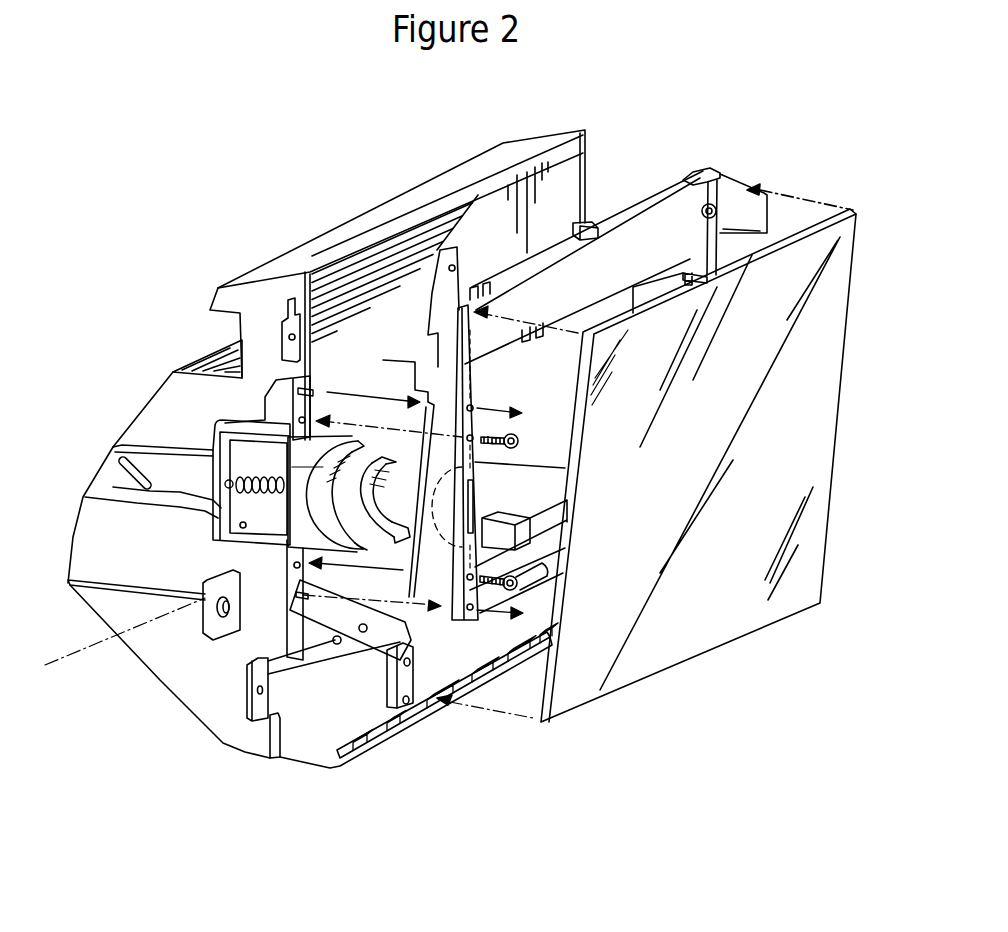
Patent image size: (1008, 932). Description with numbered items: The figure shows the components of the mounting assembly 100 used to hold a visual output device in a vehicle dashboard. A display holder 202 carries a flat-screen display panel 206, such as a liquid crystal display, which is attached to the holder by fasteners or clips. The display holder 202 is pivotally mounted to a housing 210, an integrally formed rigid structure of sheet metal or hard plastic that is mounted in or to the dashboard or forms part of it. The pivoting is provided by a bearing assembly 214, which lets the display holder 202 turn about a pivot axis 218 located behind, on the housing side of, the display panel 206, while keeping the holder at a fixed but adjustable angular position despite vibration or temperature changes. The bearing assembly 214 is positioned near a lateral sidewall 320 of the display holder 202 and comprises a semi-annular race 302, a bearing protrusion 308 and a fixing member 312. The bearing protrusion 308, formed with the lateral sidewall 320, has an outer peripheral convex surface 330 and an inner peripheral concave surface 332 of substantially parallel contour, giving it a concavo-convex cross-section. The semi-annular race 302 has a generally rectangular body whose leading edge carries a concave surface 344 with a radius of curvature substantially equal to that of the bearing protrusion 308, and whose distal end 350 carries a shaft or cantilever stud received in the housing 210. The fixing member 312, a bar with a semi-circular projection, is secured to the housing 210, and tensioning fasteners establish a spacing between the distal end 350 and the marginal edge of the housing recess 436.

The mounting assembly 100 is at (201, 298).
The display holder 202 is at (333, 420).
The flat-screen display panel 206 is at (778, 608).
The housing 210 is at (270, 287).
The bearing assembly 214 is at (418, 642).
The pivot axis 218 is at (72, 655).
The semi-annular race 302 is at (322, 494).
The bearing protrusion 308 is at (383, 427).
The fixing member 312 is at (475, 466).
The lateral sidewall 320 is at (385, 432).
The outer peripheral convex surface 330 is at (378, 530).
The inner peripheral concave surface 332 is at (390, 607).
The concave surface 344 is at (113, 487).
The distal end 350 is at (247, 450).
The housing recess 436 is at (248, 443).